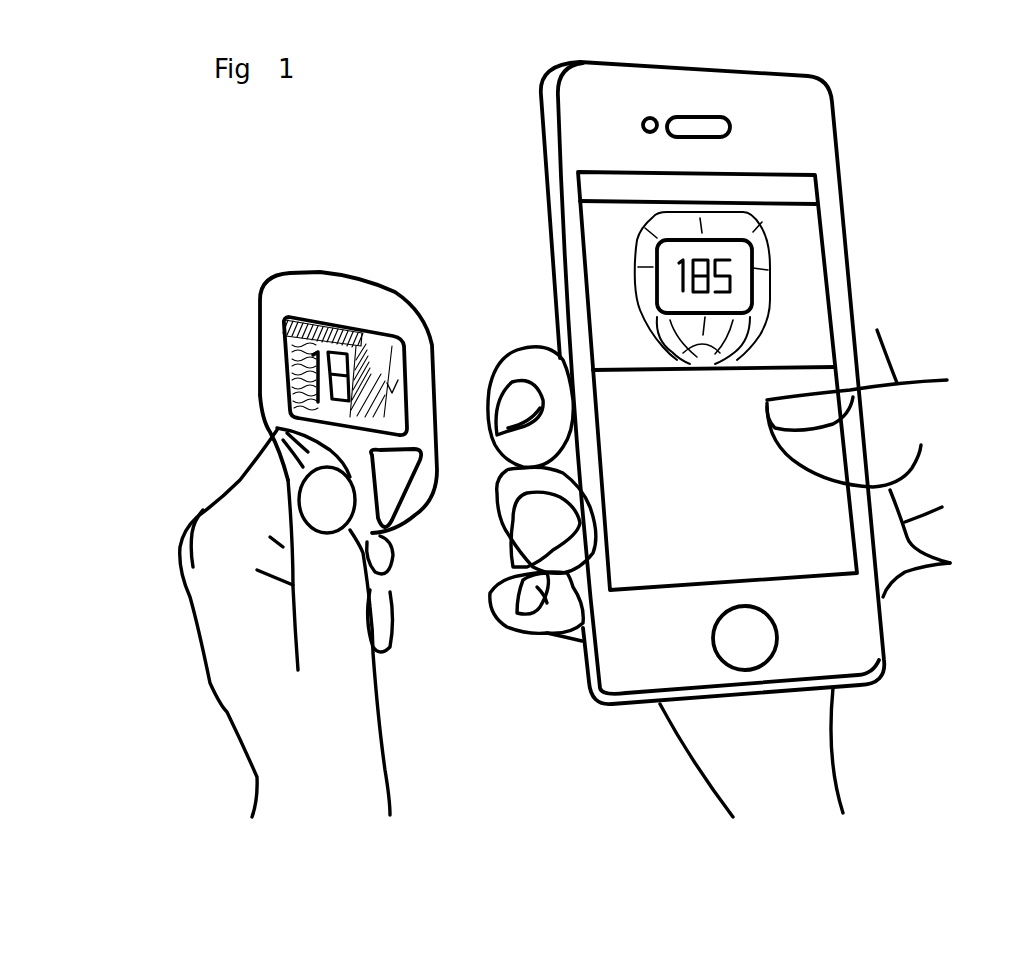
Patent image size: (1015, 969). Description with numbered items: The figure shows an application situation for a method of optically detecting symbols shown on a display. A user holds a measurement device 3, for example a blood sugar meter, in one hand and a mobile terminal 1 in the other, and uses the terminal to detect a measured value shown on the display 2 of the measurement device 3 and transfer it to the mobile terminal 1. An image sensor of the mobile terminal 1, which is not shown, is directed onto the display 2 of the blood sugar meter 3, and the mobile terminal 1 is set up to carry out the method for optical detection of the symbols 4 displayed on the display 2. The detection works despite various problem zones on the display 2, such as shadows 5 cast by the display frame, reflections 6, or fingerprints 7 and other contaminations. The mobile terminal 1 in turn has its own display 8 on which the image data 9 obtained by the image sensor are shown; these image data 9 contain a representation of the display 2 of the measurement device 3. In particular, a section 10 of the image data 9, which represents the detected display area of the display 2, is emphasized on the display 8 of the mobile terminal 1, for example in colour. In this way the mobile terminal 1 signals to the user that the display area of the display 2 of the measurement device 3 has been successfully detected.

The mobile terminal 1 is at (808, 110).
The display 2 is at (313, 316).
The measurement device 3 is at (282, 294).
The symbols 4 is at (354, 318).
The shadows 5 is at (334, 318).
The reflections 6 is at (393, 389).
The fingerprints 7 is at (287, 382).
The display 8 is at (803, 522).
The image data 9 is at (795, 235).
The section 10 is at (740, 293).